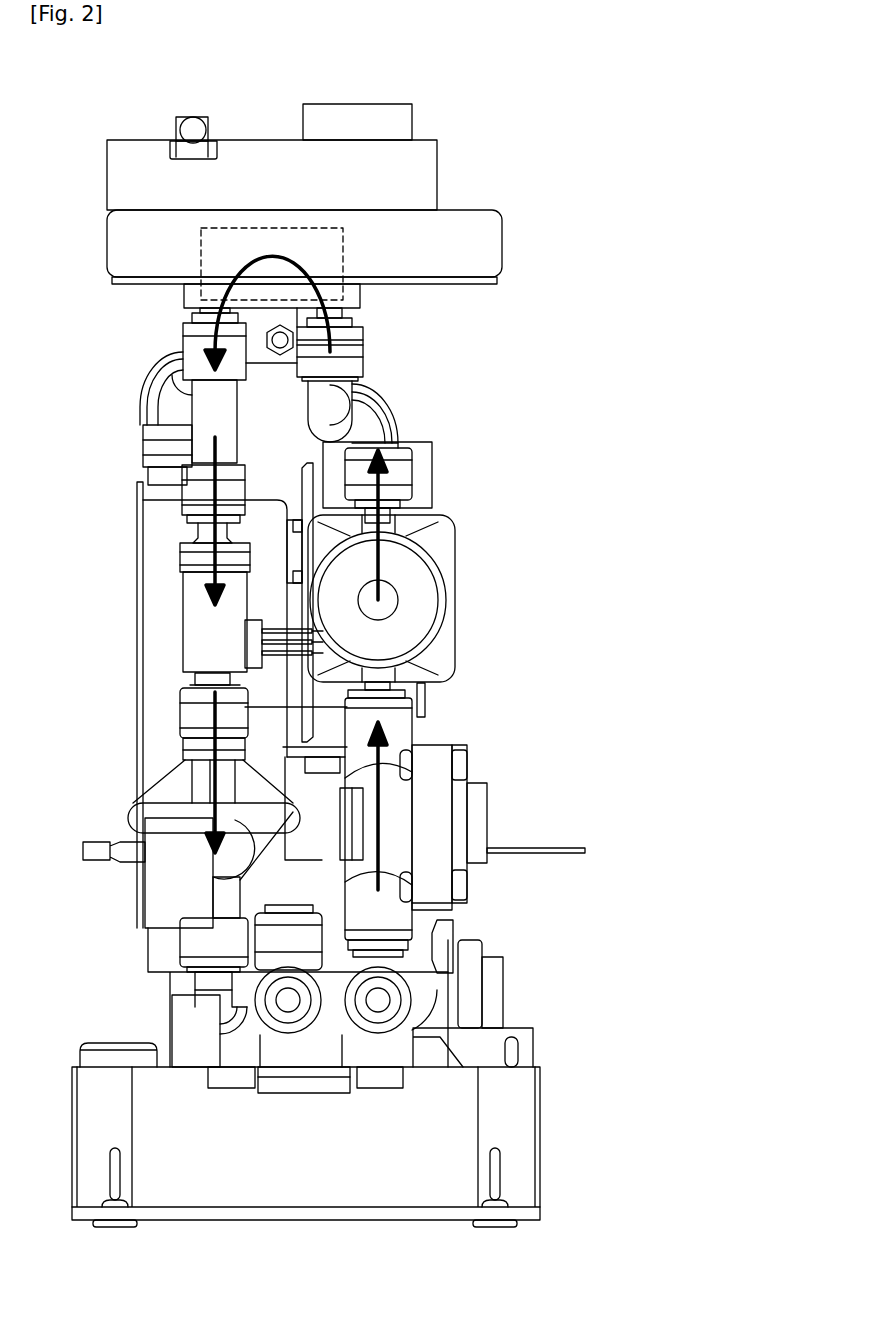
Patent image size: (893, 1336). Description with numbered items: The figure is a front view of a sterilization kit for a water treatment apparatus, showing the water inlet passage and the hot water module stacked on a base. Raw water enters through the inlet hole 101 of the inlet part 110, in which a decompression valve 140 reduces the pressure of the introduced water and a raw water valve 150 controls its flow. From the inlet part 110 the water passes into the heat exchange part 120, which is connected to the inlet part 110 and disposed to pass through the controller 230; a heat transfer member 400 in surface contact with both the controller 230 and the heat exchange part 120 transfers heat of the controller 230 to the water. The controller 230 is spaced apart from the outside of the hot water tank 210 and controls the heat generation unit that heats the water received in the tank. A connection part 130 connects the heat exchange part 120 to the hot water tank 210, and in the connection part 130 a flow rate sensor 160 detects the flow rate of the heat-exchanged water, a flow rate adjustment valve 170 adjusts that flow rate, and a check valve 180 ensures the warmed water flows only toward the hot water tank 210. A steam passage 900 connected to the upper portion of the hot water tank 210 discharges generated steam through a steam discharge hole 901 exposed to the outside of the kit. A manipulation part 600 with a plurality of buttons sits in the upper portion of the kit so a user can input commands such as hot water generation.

The manipulation part 600 is at (357, 102).
The controller 230 is at (265, 227).
The heat transfer member 400 is at (360, 293).
The heat exchange part 120 is at (337, 312).
The check valve 180 is at (205, 397).
The steam passage 900 is at (170, 408).
The connection part 130 is at (203, 533).
The flow rate sensor 160 is at (193, 602).
The hot water tank 210 is at (160, 637).
The raw water valve 150 is at (422, 600).
The inlet part 110 is at (400, 733).
The decompression valve 140 is at (452, 822).
The flow rate adjustment valve 170 is at (203, 833).
The steam discharge hole 901 is at (288, 1003).
The inlet hole 101 is at (378, 1003).